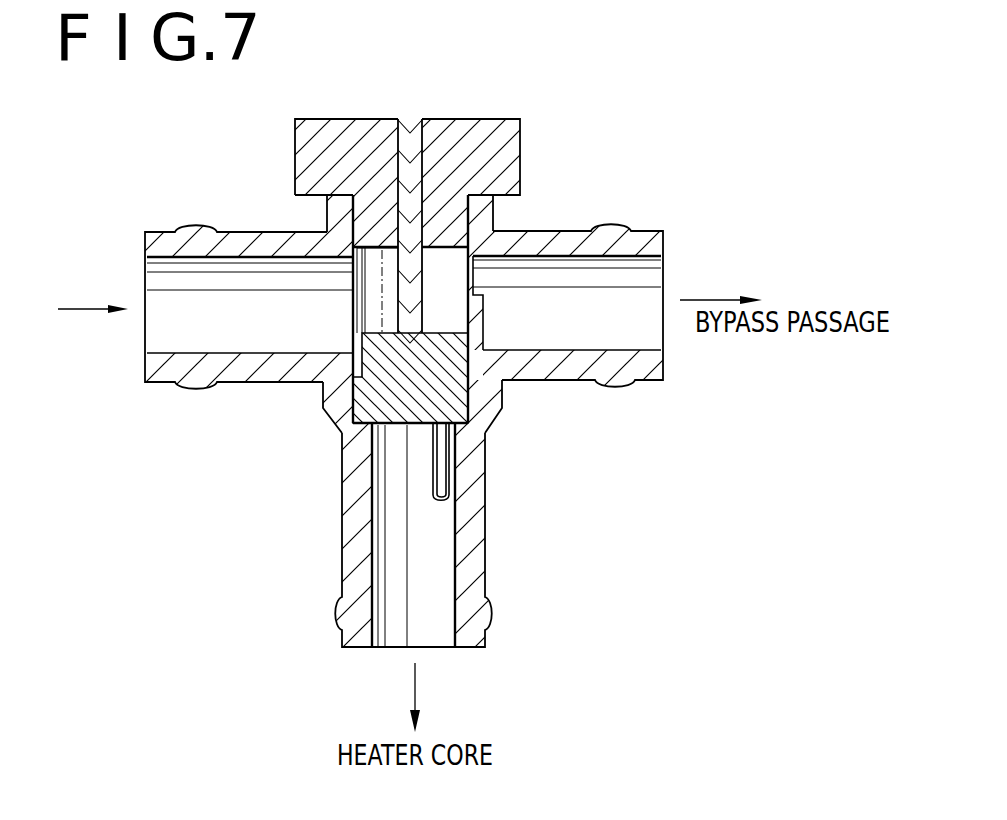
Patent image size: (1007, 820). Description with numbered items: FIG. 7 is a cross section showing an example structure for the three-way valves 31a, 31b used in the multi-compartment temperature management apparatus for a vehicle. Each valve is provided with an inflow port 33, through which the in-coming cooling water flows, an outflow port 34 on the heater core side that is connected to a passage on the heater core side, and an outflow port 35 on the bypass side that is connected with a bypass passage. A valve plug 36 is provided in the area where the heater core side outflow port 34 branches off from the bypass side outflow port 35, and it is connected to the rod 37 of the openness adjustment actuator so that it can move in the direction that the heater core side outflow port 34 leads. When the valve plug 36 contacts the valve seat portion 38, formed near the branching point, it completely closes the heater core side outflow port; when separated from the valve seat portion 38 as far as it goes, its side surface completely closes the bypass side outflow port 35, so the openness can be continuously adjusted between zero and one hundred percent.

The 3-way valve 31a is at (518, 278).
The 3-way valve 31b is at (412, 314).
The inflow port 33 is at (178, 330).
The outflow port on the heater core side 34 is at (440, 630).
The outflow port on the bypass side 35 is at (627, 306).
The valve plug 36 is at (450, 408).
The rod 37 is at (413, 119).
The valve seat portion 38 is at (360, 446).